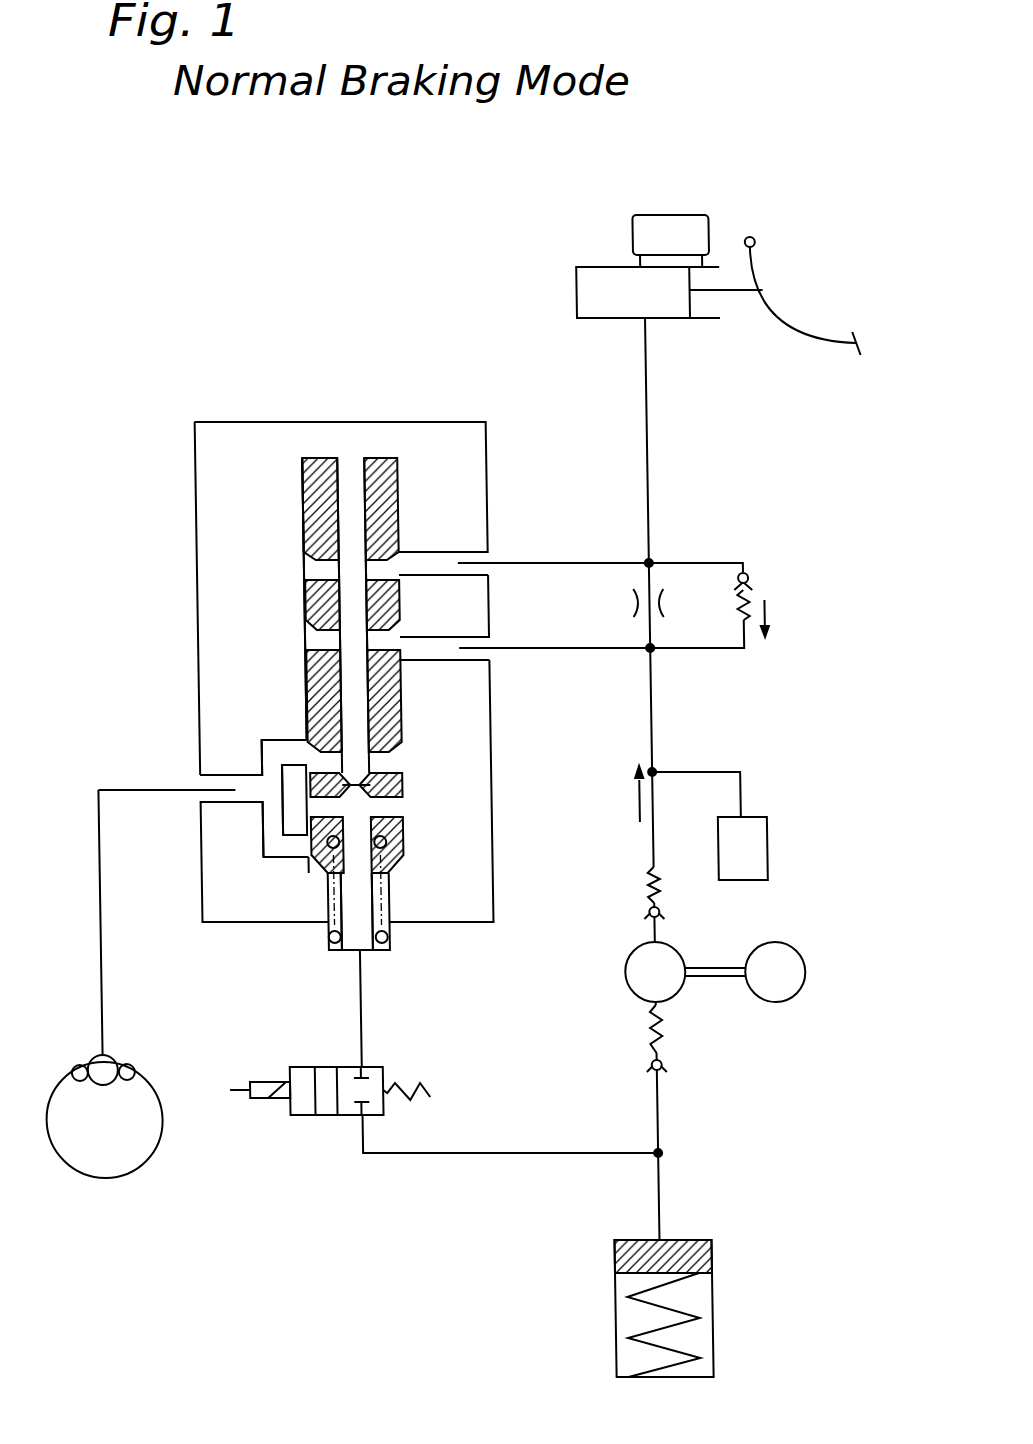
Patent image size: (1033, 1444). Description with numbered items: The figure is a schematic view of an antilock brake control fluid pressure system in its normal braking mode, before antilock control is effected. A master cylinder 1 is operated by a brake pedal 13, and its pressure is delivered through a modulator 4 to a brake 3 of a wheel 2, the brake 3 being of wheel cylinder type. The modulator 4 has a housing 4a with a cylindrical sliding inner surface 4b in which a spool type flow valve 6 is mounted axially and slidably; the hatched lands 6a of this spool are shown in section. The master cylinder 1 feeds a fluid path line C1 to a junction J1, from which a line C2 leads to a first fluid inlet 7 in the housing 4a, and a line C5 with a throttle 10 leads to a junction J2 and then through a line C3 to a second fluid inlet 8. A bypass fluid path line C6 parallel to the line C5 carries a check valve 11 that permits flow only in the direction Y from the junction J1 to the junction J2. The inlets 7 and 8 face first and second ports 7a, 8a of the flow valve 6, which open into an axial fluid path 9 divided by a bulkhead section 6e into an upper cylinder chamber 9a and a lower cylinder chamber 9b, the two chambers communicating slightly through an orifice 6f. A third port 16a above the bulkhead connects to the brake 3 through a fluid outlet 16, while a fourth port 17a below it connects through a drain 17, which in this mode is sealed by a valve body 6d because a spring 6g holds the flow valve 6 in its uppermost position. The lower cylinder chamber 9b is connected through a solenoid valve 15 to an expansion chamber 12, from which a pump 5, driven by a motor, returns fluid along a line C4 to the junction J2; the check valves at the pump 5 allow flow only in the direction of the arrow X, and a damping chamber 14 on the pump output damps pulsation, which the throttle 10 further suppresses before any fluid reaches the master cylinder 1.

The master cylinder 1 is at (594, 298).
The wheel 2 is at (137, 1029).
The brake 3 is at (96, 1068).
The modulator 4 is at (199, 475).
The housing 4a is at (247, 440).
The cylindrical sliding inner surface 4b is at (317, 473).
The pump 5 is at (620, 972).
The flow valve 6 is at (381, 726).
The piston land 6a is at (316, 523).
The valve body 6d is at (397, 838).
The bulkhead section 6e is at (401, 777).
The orifice 6f is at (354, 793).
The spring 6g is at (379, 898).
The first fluid inlet 7 is at (553, 534).
The first port 7a is at (377, 571).
The second fluid inlet 8 is at (555, 712).
The second port 8a is at (378, 638).
The fluid path 9 is at (293, 699).
The upper cylinder chamber 9a is at (355, 480).
The lower cylinder chamber 9b is at (372, 960).
The throttle 10 is at (632, 605).
The check valve 11 is at (760, 580).
The expansion chamber 12 is at (677, 1237).
The brake pedal 13 is at (803, 296).
The damping chamber 14 is at (765, 843).
The solenoid valve 15 is at (297, 1117).
The fluid outlet 16 is at (202, 774).
The third port 16a is at (311, 737).
The drain 17 is at (211, 843).
The fourth port 17a is at (285, 807).
The fluid path line C1 is at (651, 430).
The fluid path line C2 is at (557, 563).
The fluid path line C3 is at (555, 650).
The fluid path line C4 is at (651, 745).
The fluid path line C5 is at (658, 639).
The bypass fluid path line C6 is at (755, 579).
The junction J1 is at (655, 557).
The junction J2 is at (657, 652).
The arrow X is at (624, 802).
The direction Y is at (778, 626).